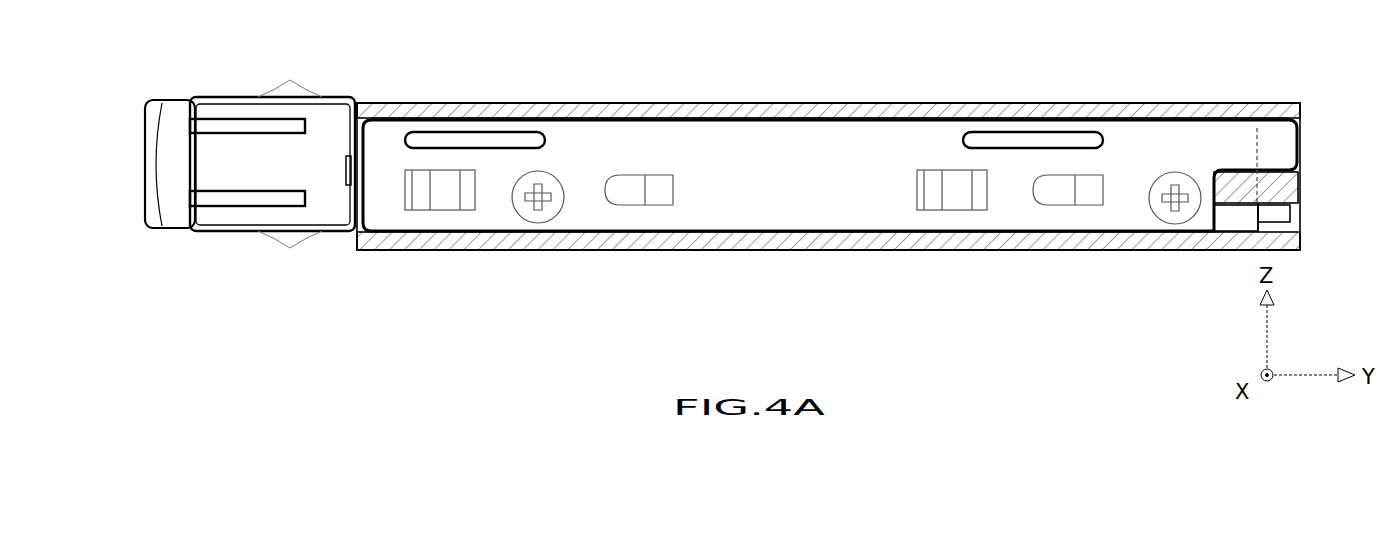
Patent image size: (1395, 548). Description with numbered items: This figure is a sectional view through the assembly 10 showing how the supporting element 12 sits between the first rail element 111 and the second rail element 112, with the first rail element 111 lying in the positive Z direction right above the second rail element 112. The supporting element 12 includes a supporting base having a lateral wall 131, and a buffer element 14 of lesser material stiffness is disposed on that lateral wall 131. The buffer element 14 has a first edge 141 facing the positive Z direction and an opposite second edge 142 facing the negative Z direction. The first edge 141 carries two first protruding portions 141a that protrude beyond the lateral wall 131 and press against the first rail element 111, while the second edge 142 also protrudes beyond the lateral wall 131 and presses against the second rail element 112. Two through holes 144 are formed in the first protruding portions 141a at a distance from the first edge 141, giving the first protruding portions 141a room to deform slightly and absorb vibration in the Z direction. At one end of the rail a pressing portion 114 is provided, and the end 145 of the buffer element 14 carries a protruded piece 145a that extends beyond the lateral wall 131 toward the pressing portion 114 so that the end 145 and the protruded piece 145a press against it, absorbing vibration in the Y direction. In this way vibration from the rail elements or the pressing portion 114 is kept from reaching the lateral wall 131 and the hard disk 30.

The electronic device 10 is at (1368, 40).
The supporting element 12 is at (136, 169).
The buffer element 14 is at (868, 183).
The first rail element 111 is at (625, 108).
The second rail element 112 is at (658, 243).
The pressing portion 114 is at (1272, 197).
The lateral wall 131 is at (1257, 130).
The first edge 141 is at (740, 110).
The first protruding portion 141a is at (478, 118).
The second edge 142 is at (738, 246).
The through hole 144 is at (452, 138).
The end 145 is at (1222, 215).
The protruded piece 145a is at (1283, 150).
The hard disk 30 is at (1296, 222).